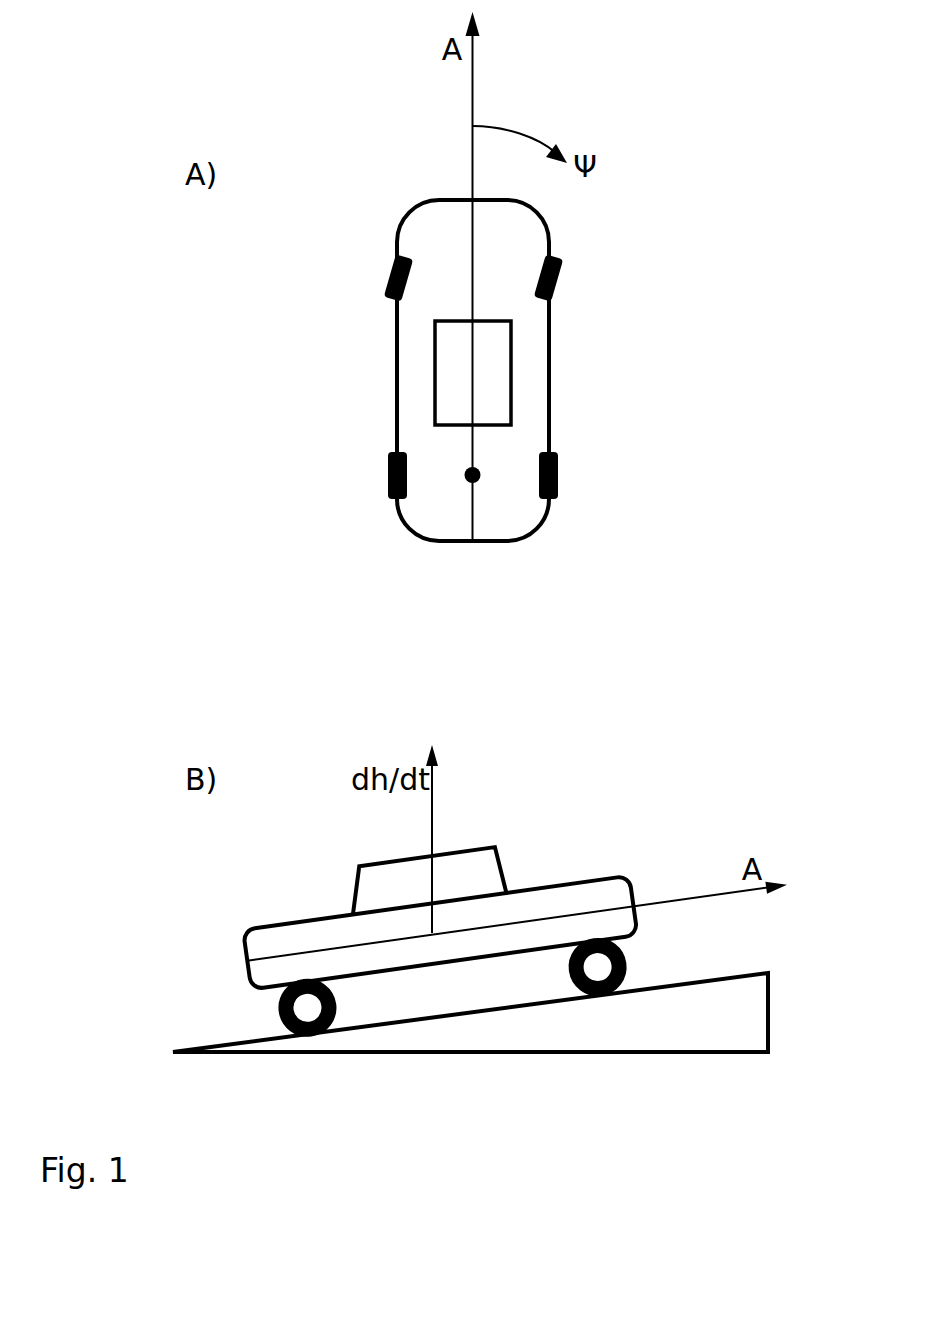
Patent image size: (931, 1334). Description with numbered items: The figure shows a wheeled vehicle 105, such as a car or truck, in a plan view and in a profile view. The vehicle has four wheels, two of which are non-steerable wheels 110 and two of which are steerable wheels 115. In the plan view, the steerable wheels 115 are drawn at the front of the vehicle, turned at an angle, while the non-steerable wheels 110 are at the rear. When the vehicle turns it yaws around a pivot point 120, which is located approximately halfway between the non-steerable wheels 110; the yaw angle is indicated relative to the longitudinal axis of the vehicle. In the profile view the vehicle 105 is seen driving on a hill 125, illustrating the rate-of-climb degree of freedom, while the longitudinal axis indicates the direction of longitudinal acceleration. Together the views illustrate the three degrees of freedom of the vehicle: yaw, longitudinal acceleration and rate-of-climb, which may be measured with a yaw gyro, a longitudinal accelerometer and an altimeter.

In FIG. 1A, the wheeled vehicle 105 is at (545, 530).
In FIG. 1B, the wheeled vehicle 105 is at (240, 925).
In FIG. 1A, the non-steerable wheel 110 is at (388, 477).
In FIG. 1B, the non-steerable wheel 110 is at (277, 1018).
In FIG. 1A, the steerable wheel 115 is at (385, 288).
In FIG. 1B, the steerable wheel 115 is at (630, 968).
In FIG. 1A, the pivot point 120 is at (462, 483).
In FIG. 1B, the hill 125 is at (690, 1037).